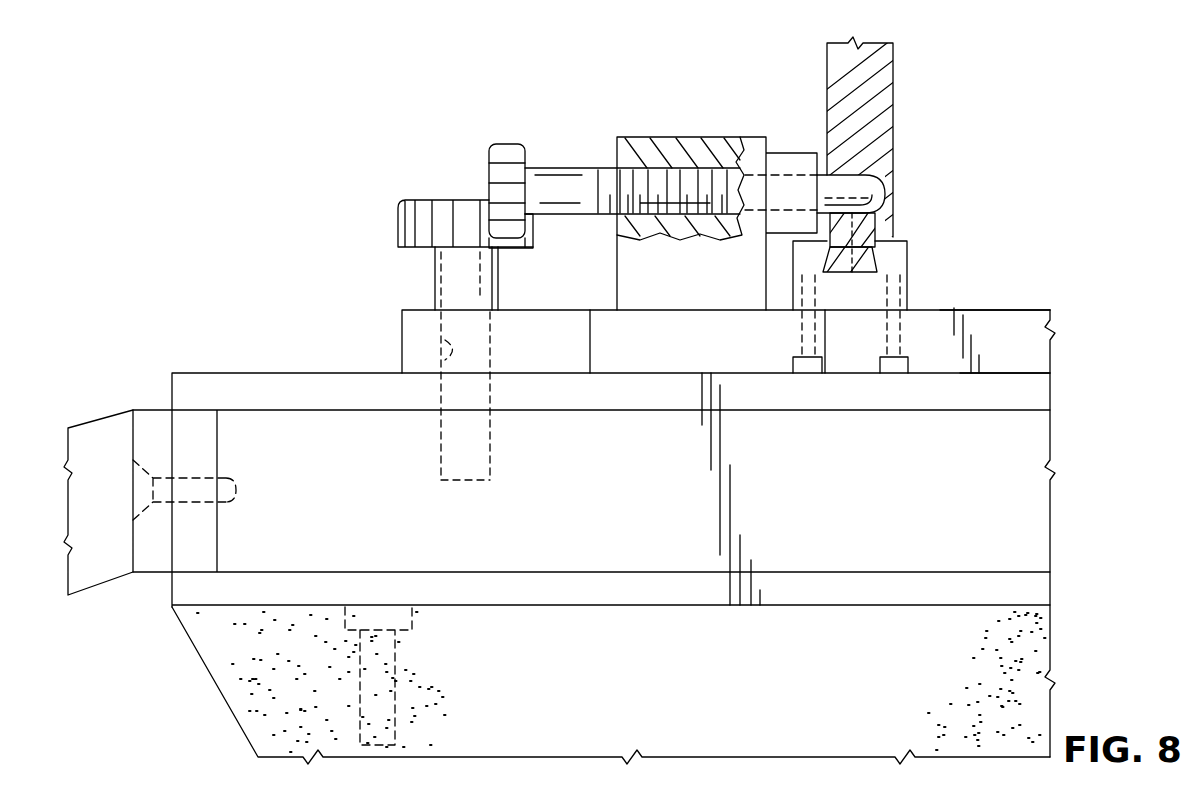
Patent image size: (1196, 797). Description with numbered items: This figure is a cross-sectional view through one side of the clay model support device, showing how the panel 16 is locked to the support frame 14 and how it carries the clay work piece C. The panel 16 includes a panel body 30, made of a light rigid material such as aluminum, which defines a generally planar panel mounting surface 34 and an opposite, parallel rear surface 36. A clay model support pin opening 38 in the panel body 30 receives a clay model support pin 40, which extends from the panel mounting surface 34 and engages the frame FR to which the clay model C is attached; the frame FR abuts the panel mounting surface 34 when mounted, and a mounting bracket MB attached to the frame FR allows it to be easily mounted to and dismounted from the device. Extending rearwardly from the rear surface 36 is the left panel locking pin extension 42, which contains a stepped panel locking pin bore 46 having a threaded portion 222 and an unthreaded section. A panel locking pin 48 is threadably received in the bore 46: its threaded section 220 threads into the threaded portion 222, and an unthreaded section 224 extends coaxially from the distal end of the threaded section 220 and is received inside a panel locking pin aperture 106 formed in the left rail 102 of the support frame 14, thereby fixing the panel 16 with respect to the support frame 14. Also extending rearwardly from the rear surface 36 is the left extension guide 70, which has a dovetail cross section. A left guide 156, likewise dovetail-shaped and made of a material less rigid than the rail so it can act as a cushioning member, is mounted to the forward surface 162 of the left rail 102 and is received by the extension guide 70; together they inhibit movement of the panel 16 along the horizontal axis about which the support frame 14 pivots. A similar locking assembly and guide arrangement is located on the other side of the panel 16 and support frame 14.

The support frame 14 is at (860, 159).
The panel 16 is at (774, 319).
The panel body 30 is at (1020, 322).
The panel mounting surface 34 is at (1023, 373).
The rear surface 36 is at (984, 307).
The clay model support pin opening 38 is at (440, 346).
The clay model support pin 40 is at (445, 280).
The left panel locking pin extension 42 is at (643, 142).
The panel locking pin bore 46 is at (668, 180).
The panel locking pin 48 is at (572, 178).
The left extension guide 70 is at (855, 290).
The left rail 102 is at (885, 97).
The panel locking pin aperture 106 is at (885, 198).
The left guide 156 is at (878, 258).
The forward surface 162 is at (895, 237).
The threaded section 220 is at (707, 178).
The threaded portion 222 is at (680, 238).
The unthreaded section 224 is at (848, 185).
The mounting bracket MB is at (118, 430).
The frame FR is at (1025, 540).
The clay work piece C is at (1025, 650).